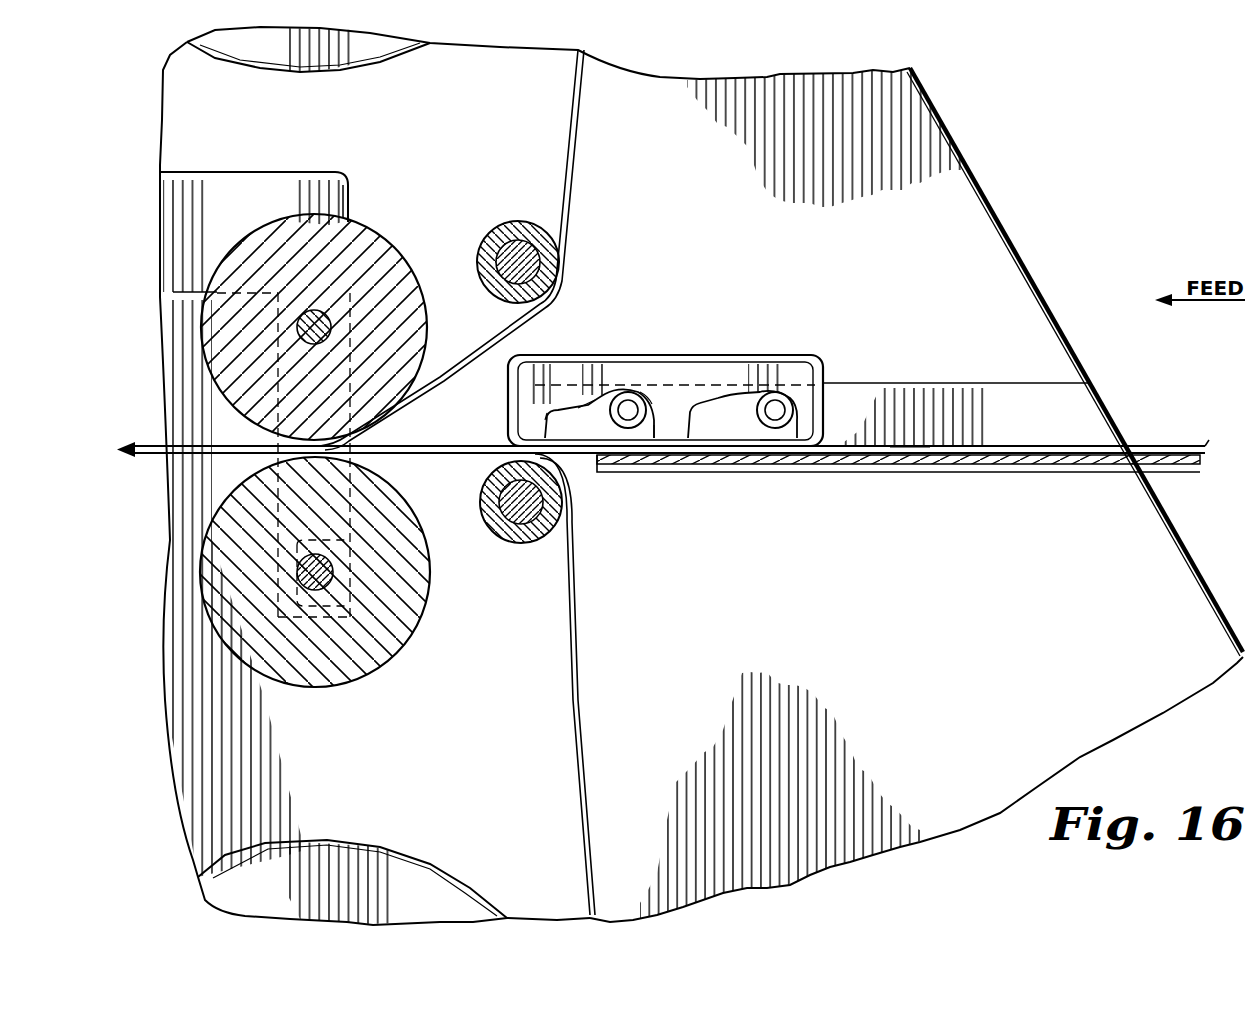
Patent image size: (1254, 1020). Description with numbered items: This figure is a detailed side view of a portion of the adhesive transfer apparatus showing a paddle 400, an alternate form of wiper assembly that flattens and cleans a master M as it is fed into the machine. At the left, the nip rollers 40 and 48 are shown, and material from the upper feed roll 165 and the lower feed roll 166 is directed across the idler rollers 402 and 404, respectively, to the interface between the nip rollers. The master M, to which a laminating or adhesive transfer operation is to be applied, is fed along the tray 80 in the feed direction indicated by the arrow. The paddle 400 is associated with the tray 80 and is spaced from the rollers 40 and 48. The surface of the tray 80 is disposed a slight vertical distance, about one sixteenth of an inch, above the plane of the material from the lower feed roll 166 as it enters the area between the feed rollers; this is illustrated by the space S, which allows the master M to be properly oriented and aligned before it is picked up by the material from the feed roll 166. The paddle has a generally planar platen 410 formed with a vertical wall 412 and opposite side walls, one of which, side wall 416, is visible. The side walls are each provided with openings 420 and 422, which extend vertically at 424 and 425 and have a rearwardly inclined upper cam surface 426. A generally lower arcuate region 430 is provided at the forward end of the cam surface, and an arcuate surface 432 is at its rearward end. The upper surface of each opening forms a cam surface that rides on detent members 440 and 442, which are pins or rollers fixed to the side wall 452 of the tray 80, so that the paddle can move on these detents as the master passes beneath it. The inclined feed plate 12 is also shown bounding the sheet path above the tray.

The feed plate 12 is at (995, 230).
The nip roller 40 is at (390, 255).
The nip roller 48 is at (417, 617).
The tray 80 is at (940, 470).
The upper feed roll 165 is at (360, 52).
The lower feed roll 166 is at (350, 857).
The paddle 400 is at (916, 495).
The idler roller 402 is at (553, 268).
The idler roller 404 is at (517, 543).
The platen 410 is at (768, 443).
The vertical wall 412 is at (828, 373).
The side wall 416 is at (705, 360).
The opening 420 is at (549, 431).
The opening 422 is at (710, 428).
The vertical extent of opening 424 is at (547, 416).
The vertical extent of opening 425 is at (653, 428).
The upper cam surface 426 is at (588, 400).
The lower arcuate region 430 is at (553, 403).
The arcuate surface 432 is at (620, 390).
The detent member 440 is at (640, 393).
The detent member 442 is at (783, 395).
The side wall of tray 452 is at (1057, 392).
The master M is at (905, 443).
The space S is at (566, 461).